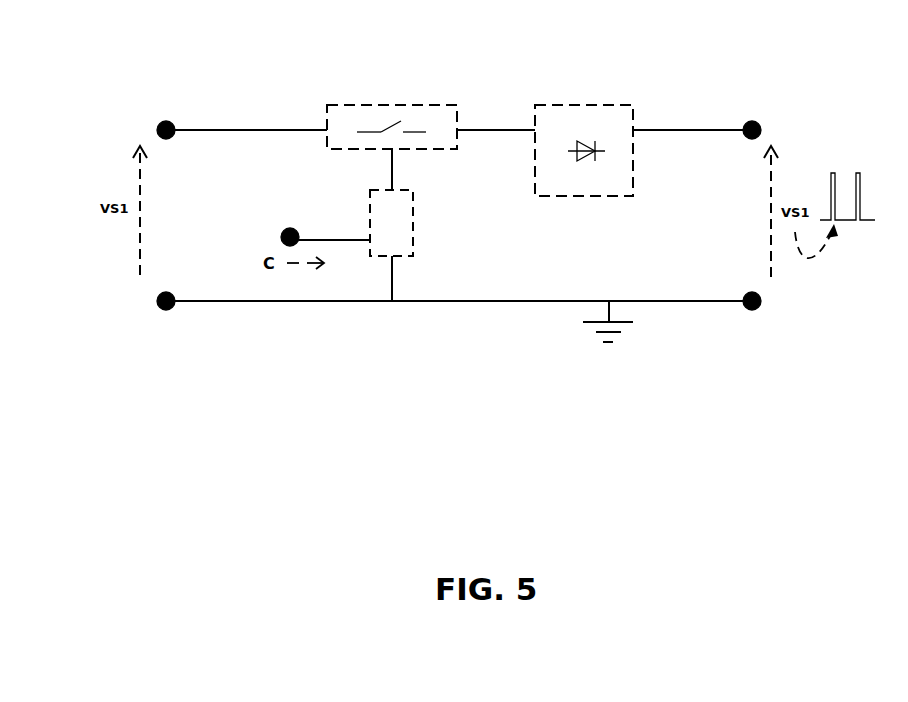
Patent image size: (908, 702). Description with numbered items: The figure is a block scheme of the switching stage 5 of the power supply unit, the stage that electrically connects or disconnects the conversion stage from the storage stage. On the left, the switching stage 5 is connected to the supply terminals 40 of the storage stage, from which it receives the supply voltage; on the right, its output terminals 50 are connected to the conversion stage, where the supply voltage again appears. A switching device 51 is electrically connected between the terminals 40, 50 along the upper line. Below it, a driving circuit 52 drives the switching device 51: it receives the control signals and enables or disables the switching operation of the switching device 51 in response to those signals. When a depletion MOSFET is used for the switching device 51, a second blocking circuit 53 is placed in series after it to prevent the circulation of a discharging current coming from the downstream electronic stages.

The switching stage 5 is at (475, 410).
The supply terminals 40 is at (172, 320).
The output terminals 50 is at (753, 323).
The switching device 51 is at (356, 92).
The driving circuit 52 is at (366, 218).
The second blocking circuit 53 is at (553, 92).